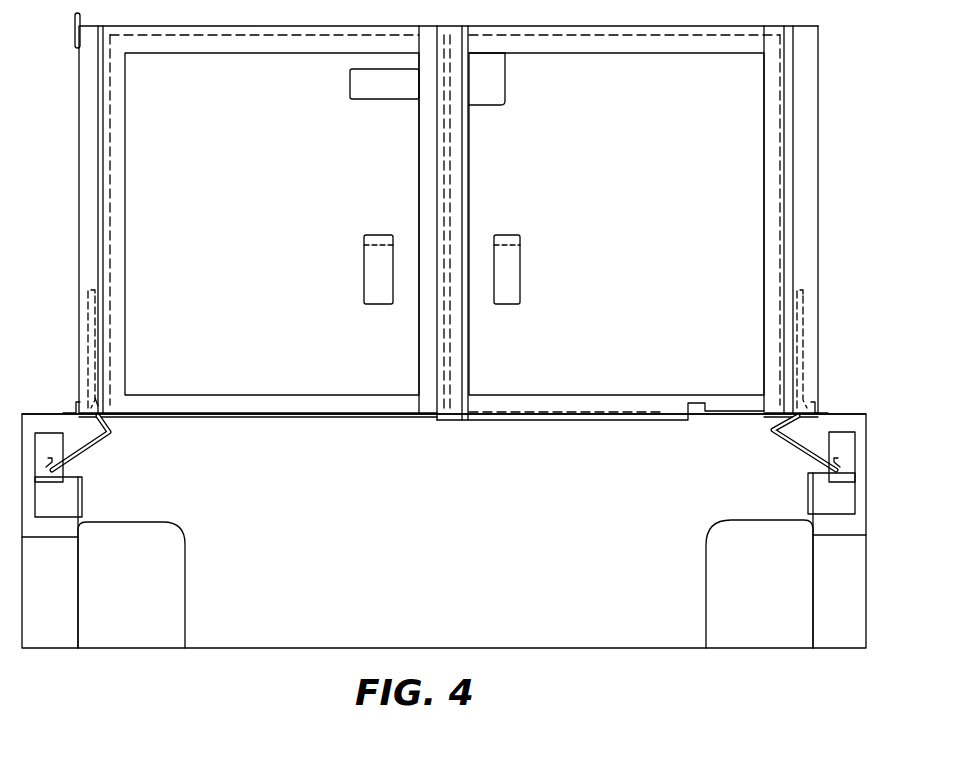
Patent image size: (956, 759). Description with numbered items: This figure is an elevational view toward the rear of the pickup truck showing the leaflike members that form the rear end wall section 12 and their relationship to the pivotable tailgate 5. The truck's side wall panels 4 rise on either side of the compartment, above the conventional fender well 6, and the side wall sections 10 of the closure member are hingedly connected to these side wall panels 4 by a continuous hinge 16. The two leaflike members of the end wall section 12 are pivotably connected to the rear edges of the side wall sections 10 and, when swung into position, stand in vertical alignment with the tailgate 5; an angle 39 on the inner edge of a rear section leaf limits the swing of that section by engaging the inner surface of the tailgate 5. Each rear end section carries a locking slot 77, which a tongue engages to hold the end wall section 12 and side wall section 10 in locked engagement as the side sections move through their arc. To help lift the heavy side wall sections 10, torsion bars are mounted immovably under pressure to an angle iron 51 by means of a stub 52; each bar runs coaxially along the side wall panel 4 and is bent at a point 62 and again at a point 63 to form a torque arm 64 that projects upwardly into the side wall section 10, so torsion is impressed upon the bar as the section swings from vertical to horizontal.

The side wall panels 4 is at (847, 600).
The pivotable tailgate 5 is at (469, 544).
The fender well 6 is at (134, 594).
The side wall section 10 is at (80, 231).
The end wall section 12 is at (271, 204).
The continuous hinge 16 is at (67, 400).
The angle 39 is at (528, 405).
The angle iron 51 is at (68, 497).
The stub 52 is at (834, 462).
The bend point 62 is at (114, 432).
The bend point 63 is at (97, 397).
The torque arm 64 is at (90, 339).
The locking slot 77 is at (510, 254).